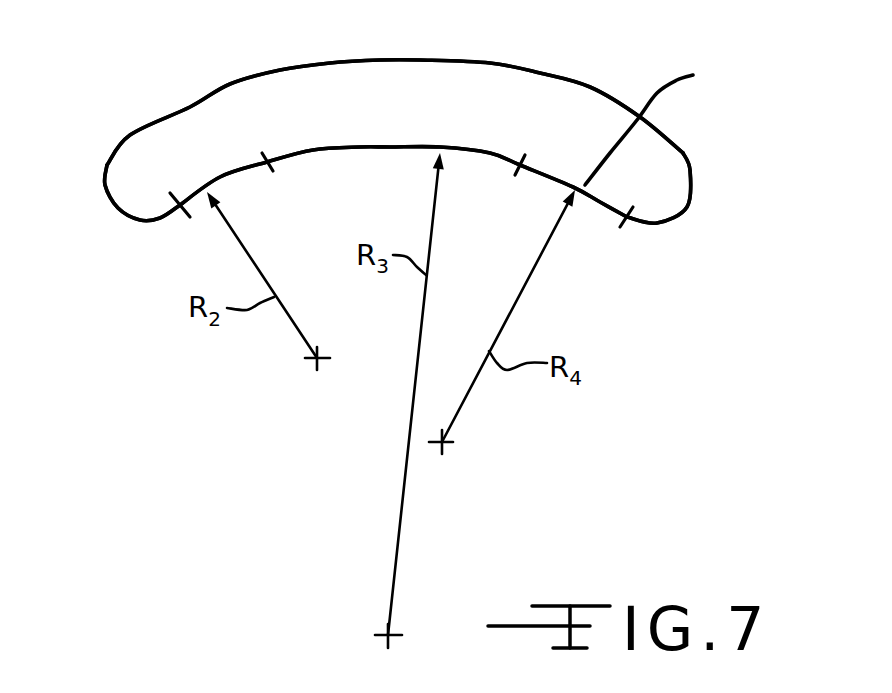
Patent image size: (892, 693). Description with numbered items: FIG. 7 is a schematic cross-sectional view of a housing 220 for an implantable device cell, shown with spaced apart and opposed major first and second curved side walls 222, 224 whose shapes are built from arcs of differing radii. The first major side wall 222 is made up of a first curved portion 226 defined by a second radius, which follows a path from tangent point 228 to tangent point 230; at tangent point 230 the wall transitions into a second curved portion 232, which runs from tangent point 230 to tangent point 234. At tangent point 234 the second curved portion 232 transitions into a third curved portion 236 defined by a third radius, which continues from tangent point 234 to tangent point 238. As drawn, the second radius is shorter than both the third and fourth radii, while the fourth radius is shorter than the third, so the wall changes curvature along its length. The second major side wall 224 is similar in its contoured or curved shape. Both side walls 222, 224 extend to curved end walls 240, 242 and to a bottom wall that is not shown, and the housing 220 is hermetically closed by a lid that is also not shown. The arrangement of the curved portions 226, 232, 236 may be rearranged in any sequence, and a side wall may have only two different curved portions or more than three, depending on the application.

The housing 220 is at (717, 120).
The first major side wall 222 is at (393, 145).
The second major side wall 224 is at (598, 103).
The first curved portion 226 is at (248, 165).
The tangent point 228 is at (183, 203).
The tangent point 230 is at (268, 162).
The second curved portion 232 is at (363, 147).
The tangent point 234 is at (510, 160).
The third curved portion 236 is at (668, 124).
The tangent point 238 is at (629, 222).
The curved end wall 240 is at (689, 193).
The curved end wall 242 is at (123, 208).